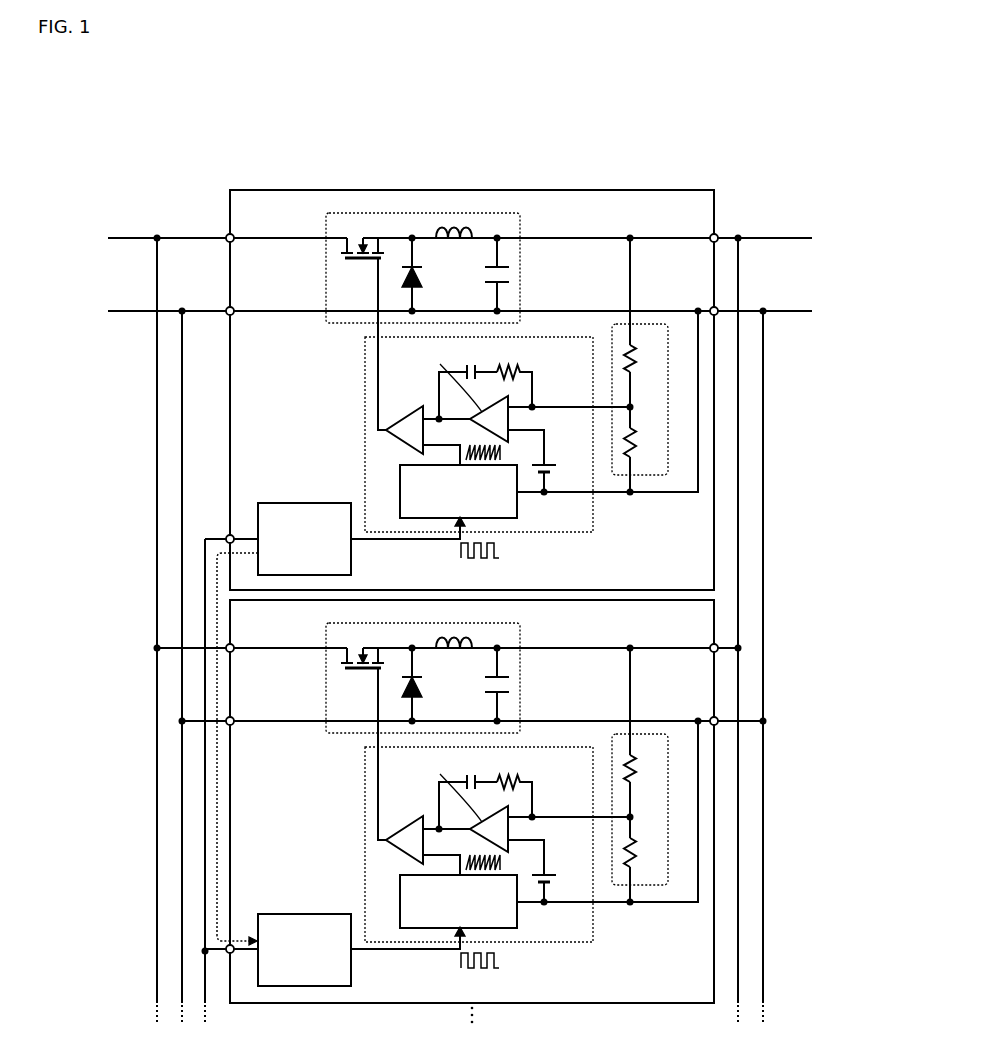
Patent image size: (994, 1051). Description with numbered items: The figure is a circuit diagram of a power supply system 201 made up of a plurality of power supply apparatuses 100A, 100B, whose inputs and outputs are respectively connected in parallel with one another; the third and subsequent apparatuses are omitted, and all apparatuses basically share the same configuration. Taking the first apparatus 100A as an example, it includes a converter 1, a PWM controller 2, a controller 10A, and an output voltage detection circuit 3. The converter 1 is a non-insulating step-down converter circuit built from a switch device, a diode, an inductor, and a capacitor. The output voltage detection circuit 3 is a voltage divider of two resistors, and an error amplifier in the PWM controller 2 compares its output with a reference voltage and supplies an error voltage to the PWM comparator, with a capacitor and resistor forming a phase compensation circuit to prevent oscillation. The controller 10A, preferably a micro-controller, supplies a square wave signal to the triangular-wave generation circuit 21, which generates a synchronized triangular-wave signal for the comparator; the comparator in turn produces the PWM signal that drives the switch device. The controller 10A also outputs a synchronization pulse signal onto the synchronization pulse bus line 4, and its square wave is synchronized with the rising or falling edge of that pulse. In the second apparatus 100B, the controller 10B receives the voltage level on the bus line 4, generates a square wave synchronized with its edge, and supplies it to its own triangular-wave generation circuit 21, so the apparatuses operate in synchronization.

The power supply system 201 is at (663, 128).
The power supply apparatus 100A is at (714, 190).
The power supply apparatus 100B is at (514, 782).
The converter 1 is at (520, 213).
The PWM controller 2 is at (593, 532).
The output voltage detection circuit 3 is at (668, 401).
The synchronization pulse bus line 4 is at (206, 797).
The triangular-wave generation circuit 21 is at (400, 490).
The controller 10A is at (305, 503).
The controller 10B is at (304, 929).